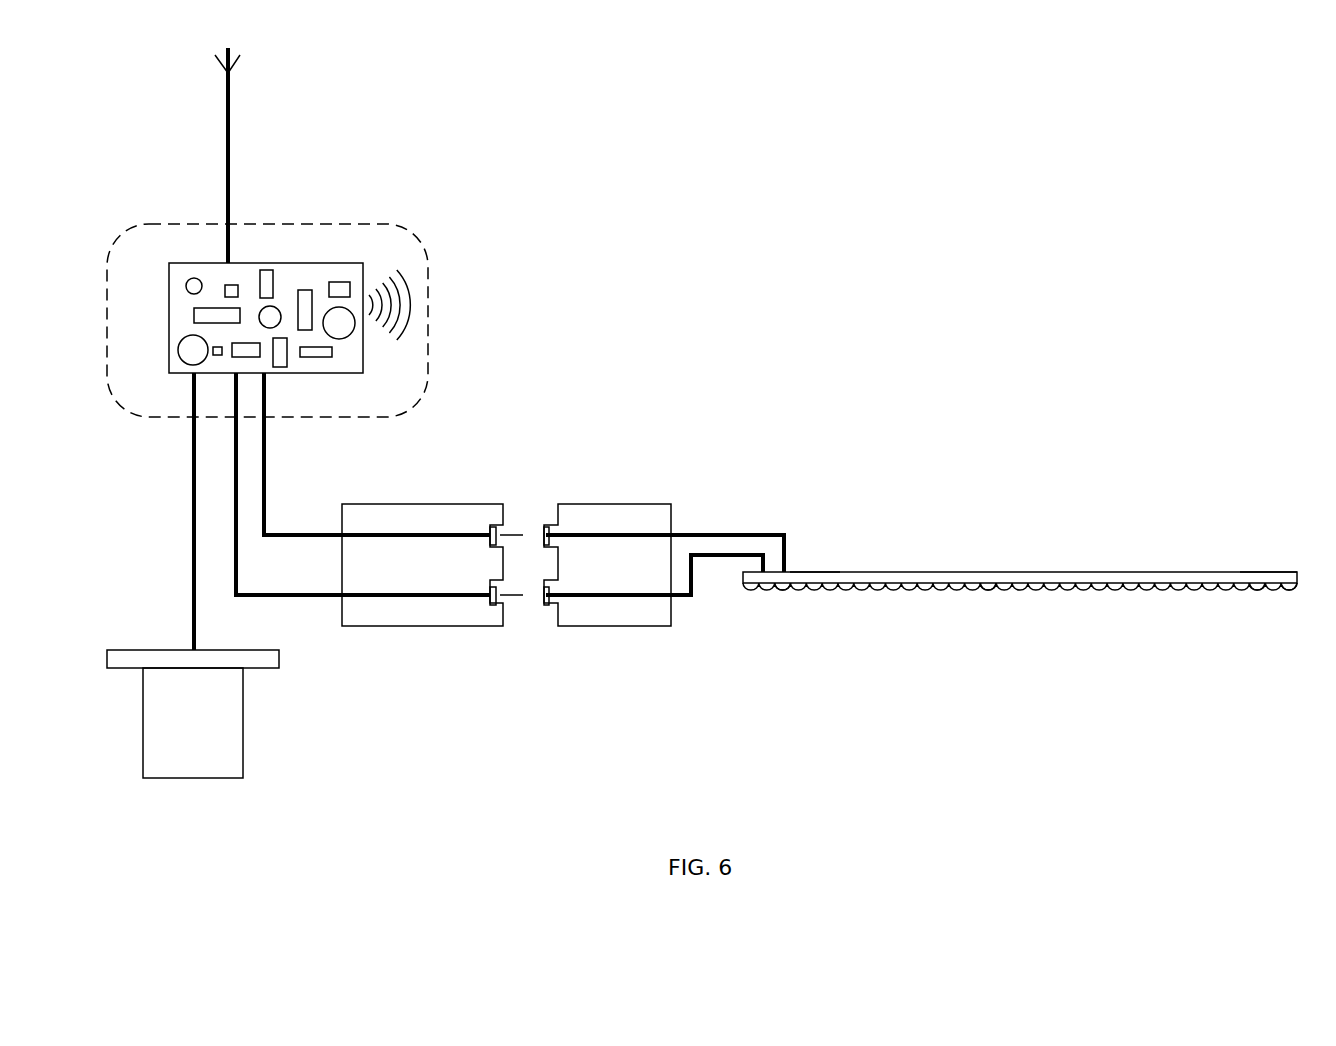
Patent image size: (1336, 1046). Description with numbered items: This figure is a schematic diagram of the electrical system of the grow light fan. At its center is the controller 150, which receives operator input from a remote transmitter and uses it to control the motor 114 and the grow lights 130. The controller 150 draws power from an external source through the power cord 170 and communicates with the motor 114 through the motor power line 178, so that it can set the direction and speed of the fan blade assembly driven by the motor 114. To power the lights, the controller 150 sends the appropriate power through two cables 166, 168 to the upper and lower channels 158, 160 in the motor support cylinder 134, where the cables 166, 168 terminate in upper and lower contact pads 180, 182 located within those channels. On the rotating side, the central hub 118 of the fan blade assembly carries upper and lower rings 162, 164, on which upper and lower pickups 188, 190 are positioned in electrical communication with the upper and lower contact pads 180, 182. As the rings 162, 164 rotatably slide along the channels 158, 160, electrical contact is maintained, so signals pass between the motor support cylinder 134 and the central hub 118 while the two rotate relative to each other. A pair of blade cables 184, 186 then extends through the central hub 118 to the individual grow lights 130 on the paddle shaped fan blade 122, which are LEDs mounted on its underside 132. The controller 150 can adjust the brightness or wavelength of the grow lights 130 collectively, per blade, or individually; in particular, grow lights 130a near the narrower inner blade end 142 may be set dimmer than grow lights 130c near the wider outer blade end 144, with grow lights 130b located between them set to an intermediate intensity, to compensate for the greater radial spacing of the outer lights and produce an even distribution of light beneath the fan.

The motor 114 is at (241, 747).
The central hub 118 is at (623, 620).
The fan blade 122 is at (862, 577).
The grow lights 130 is at (876, 591).
The grow lights near inner blade end 130a is at (783, 591).
The grow lights between inner and outer blade ends 130b is at (990, 591).
The grow lights near outer blade end 130c is at (1256, 590).
The underside of fan blade 132 is at (1281, 591).
The motor support cylinder 134 is at (444, 504).
The inner blade end 142 is at (813, 572).
The outer blade end 144 is at (1263, 578).
The controller 150 is at (428, 288).
The upper channel 158 is at (485, 525).
The lower channel 160 is at (485, 607).
The upper ring 162 is at (537, 525).
The lower ring 164 is at (549, 605).
The cable 166 is at (266, 470).
The cable 168 is at (268, 602).
The power cord 170 is at (226, 158).
The motor power line 178 is at (192, 494).
The upper contact pad 180 is at (525, 530).
The lower contact pad 182 is at (525, 600).
The blade cable 184 is at (723, 532).
The blade cable 186 is at (693, 600).
The upper pickup 188 is at (546, 525).
The lower pickup 190 is at (540, 605).